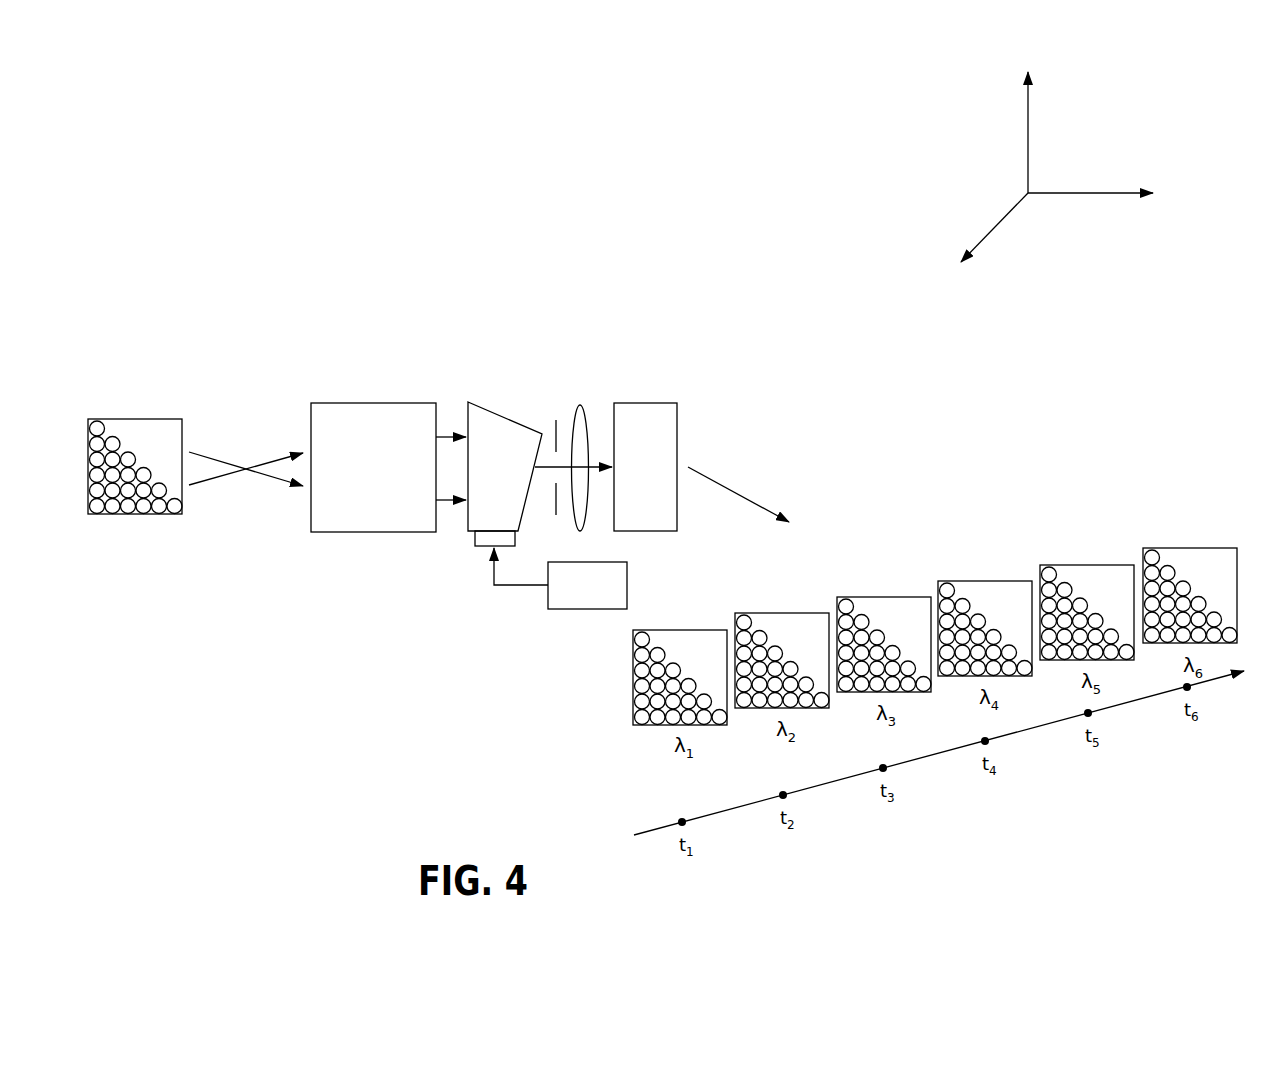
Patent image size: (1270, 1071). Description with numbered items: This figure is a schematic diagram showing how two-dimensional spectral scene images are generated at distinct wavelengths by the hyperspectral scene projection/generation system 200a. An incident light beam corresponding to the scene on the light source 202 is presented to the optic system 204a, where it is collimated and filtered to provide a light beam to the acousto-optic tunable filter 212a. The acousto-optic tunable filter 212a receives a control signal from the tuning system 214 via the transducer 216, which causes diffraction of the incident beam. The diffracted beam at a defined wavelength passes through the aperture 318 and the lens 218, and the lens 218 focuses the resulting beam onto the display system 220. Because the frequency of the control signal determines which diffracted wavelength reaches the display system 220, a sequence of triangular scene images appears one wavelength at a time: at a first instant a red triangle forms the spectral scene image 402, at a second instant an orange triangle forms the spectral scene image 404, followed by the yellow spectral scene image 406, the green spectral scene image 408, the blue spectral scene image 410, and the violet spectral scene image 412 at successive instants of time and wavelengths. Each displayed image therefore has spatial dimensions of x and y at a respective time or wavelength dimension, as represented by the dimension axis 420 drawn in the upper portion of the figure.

The hyperspectral scene projection/generation system 200a is at (655, 240).
The light source 202 is at (170, 373).
The optic system 204a is at (373, 403).
The acousto-optic tunable filter 212a is at (495, 412).
The tuning system 214 is at (588, 610).
The transducer 216 is at (475, 538).
The lens 218 is at (582, 405).
The display system 220 is at (645, 402).
The aperture 318 is at (555, 500).
The spectral scene image 402 is at (642, 630).
The spectral scene image 404 is at (743, 613).
The spectral scene image 406 is at (844, 597).
The spectral scene image 408 is at (947, 581).
The spectral scene image 410 is at (1048, 565).
The spectral scene image 412 is at (1150, 548).
The dimension axis 420 is at (1090, 124).